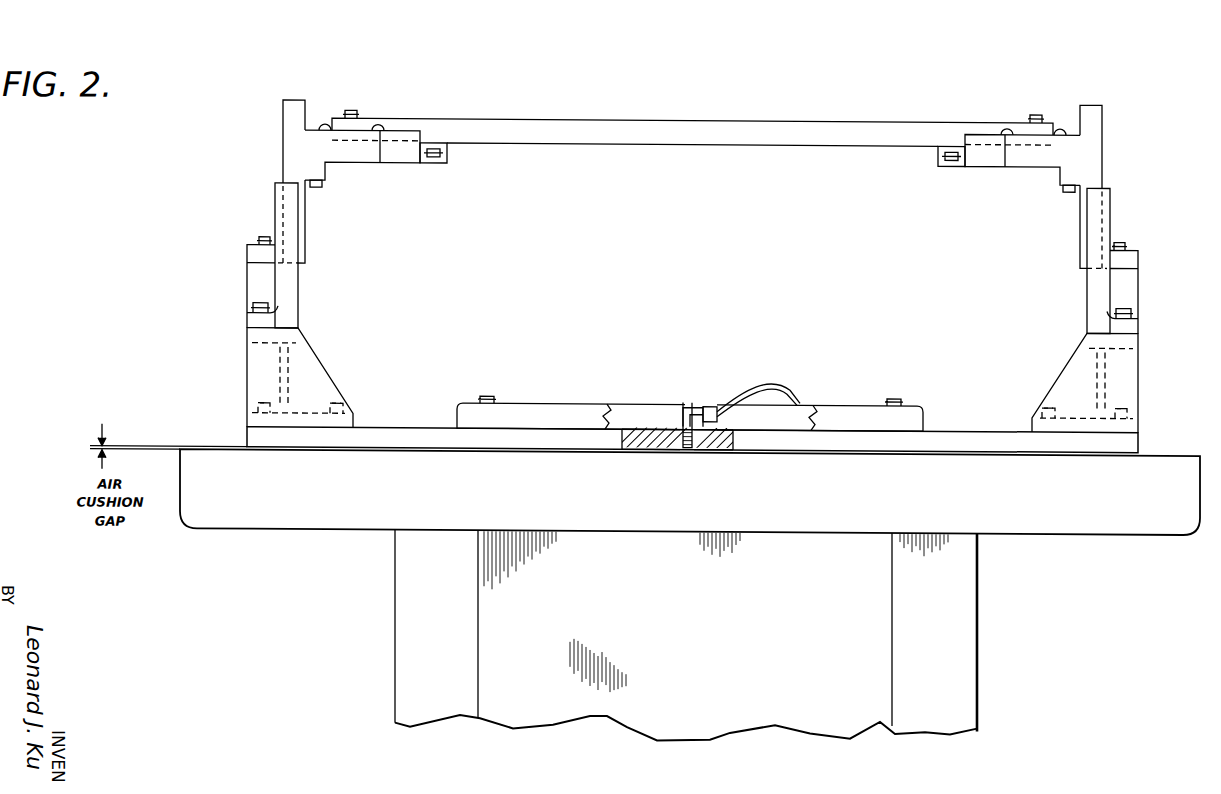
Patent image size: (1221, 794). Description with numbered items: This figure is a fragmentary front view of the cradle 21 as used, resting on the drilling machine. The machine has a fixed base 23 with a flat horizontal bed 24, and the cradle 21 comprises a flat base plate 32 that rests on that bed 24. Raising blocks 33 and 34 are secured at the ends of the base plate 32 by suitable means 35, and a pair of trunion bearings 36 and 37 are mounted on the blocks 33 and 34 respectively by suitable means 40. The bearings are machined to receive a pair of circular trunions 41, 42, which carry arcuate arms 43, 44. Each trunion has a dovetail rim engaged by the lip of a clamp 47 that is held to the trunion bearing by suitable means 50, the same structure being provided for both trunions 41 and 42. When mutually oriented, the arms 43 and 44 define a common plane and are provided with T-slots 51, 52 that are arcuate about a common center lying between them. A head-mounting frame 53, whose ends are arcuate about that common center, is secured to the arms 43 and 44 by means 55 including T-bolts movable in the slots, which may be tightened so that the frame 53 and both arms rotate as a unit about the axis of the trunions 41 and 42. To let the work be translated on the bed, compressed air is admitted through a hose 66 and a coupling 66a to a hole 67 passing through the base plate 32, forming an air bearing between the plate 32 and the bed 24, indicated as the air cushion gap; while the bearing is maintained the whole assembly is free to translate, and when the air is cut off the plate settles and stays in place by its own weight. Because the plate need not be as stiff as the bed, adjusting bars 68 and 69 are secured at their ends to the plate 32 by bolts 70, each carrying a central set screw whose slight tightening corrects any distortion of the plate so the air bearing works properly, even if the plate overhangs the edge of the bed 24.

The cradle 21 is at (607, 277).
The fixed base 23 is at (957, 617).
The bed 24 is at (1161, 444).
The base plate 32 is at (388, 435).
The raising block 33 is at (247, 370).
The raising block 34 is at (1138, 372).
The suitable means 35 is at (267, 405).
The trunion bearing 36 is at (288, 194).
The trunion bearing 37 is at (1095, 202).
The suitable means 40 is at (253, 303).
The circular trunion 41 is at (287, 141).
The circular trunion 42 is at (1097, 119).
The arcuate arm 43 is at (402, 152).
The arcuate arm 44 is at (980, 158).
The clamp 47 is at (247, 252).
The suitable means 50 is at (270, 233).
The T-slot 51 is at (440, 160).
The T-slot 52 is at (947, 158).
The head-mounting frame 53 is at (593, 116).
The means 55 is at (353, 110).
The hose 66 is at (790, 387).
The coupling 66a is at (714, 405).
The hole 67 is at (680, 427).
The adjusting bar 68 is at (547, 410).
The adjusting bar 69 is at (803, 420).
The bolts 70 is at (488, 393).